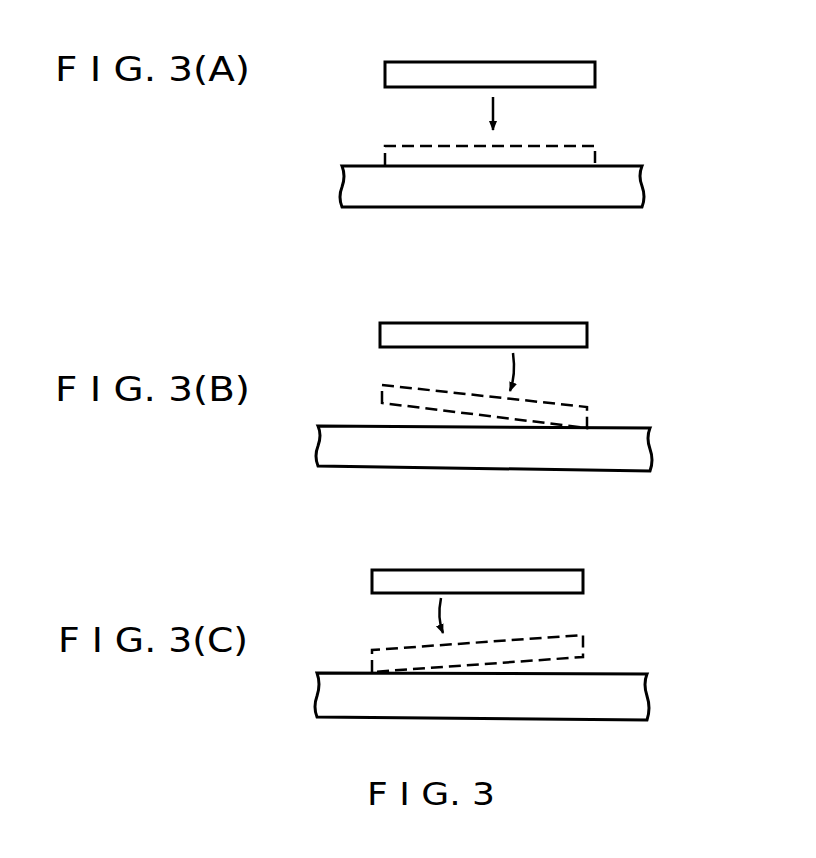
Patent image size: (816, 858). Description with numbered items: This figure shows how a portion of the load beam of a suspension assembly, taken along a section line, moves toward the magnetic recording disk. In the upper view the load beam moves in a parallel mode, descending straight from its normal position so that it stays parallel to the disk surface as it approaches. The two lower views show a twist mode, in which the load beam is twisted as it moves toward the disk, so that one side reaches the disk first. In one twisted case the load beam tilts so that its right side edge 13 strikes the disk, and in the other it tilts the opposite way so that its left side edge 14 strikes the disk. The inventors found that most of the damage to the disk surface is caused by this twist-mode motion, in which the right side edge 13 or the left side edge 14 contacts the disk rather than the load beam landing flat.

The right side edge 13 is at (588, 347).
The left side edge 14 is at (372, 593).